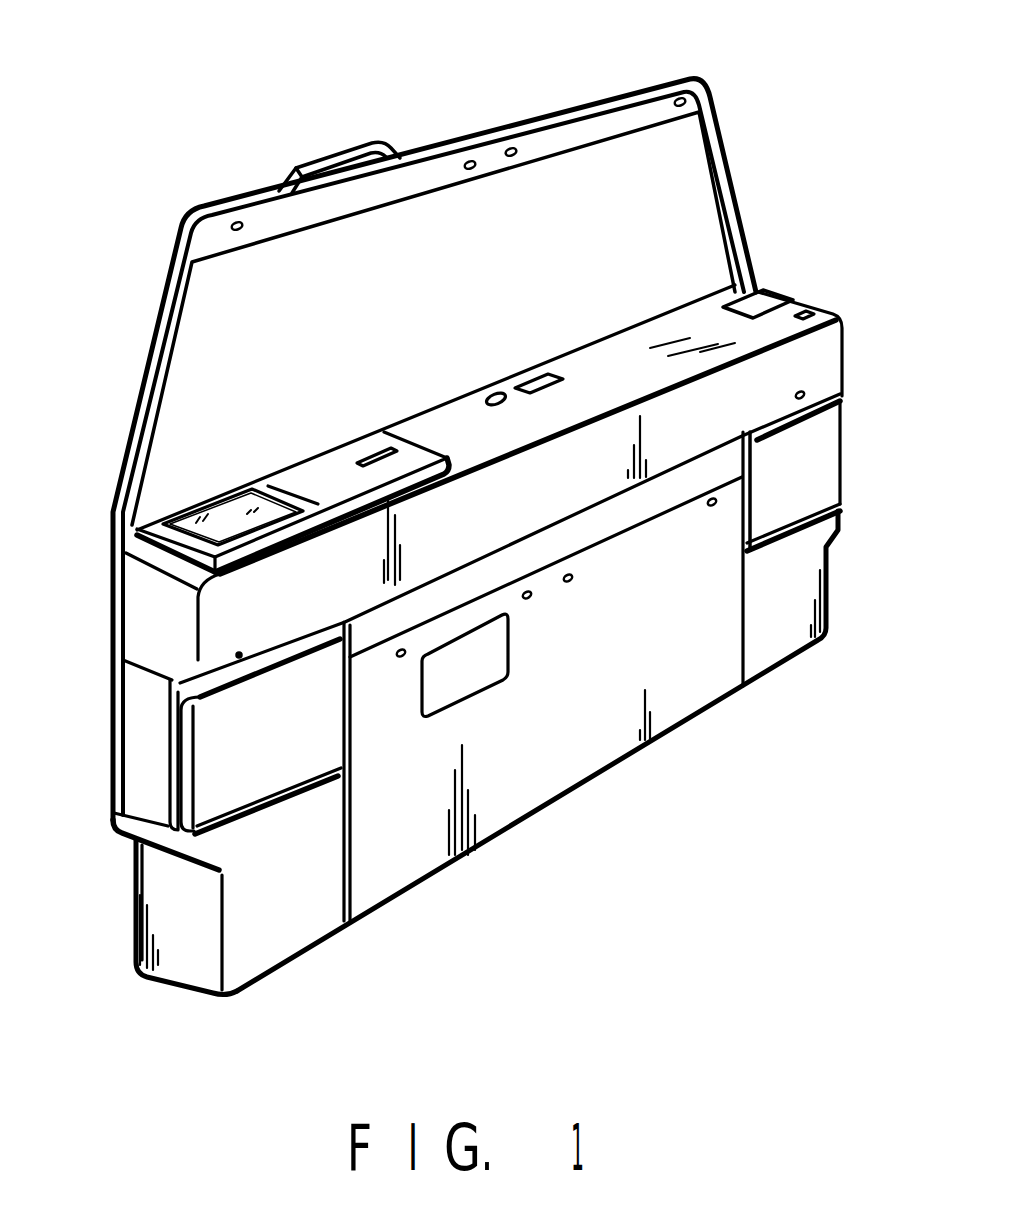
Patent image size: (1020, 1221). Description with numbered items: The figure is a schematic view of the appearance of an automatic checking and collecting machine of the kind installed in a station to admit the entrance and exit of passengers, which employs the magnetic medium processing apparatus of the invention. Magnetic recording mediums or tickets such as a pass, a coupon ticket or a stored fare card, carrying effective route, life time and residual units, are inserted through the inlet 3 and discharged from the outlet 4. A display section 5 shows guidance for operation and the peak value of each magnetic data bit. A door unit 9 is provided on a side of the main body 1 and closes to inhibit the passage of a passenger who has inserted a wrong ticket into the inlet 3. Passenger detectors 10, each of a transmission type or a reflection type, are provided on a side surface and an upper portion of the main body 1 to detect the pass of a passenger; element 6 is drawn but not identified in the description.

The main body 1 is at (116, 216).
The inlet 3 is at (788, 298).
The outlet 4 is at (377, 451).
The display section 5 is at (228, 513).
The push button 6 is at (812, 312).
The door unit 9 is at (279, 768).
The passenger detectors 10 is at (236, 222).